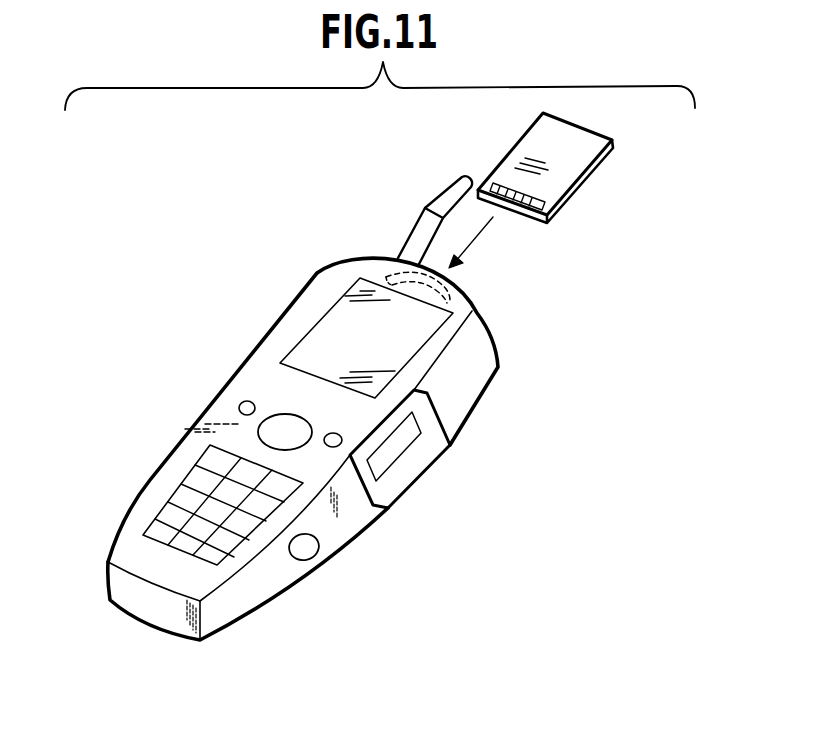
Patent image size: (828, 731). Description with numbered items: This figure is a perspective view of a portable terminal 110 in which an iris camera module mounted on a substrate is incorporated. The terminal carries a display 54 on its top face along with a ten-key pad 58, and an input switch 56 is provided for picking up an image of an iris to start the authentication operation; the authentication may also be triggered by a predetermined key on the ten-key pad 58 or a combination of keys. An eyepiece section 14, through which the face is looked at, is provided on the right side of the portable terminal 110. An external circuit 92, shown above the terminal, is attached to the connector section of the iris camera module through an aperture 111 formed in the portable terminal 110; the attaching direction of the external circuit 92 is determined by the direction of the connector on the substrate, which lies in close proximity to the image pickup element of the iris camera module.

The portable terminal 110 is at (321, 270).
The display 54 is at (420, 353).
The ten-key pad 58 is at (188, 473).
The eyepiece section 14 is at (452, 446).
The input switch 56 is at (320, 549).
The external circuit 92 is at (610, 163).
The aperture 111 is at (468, 291).